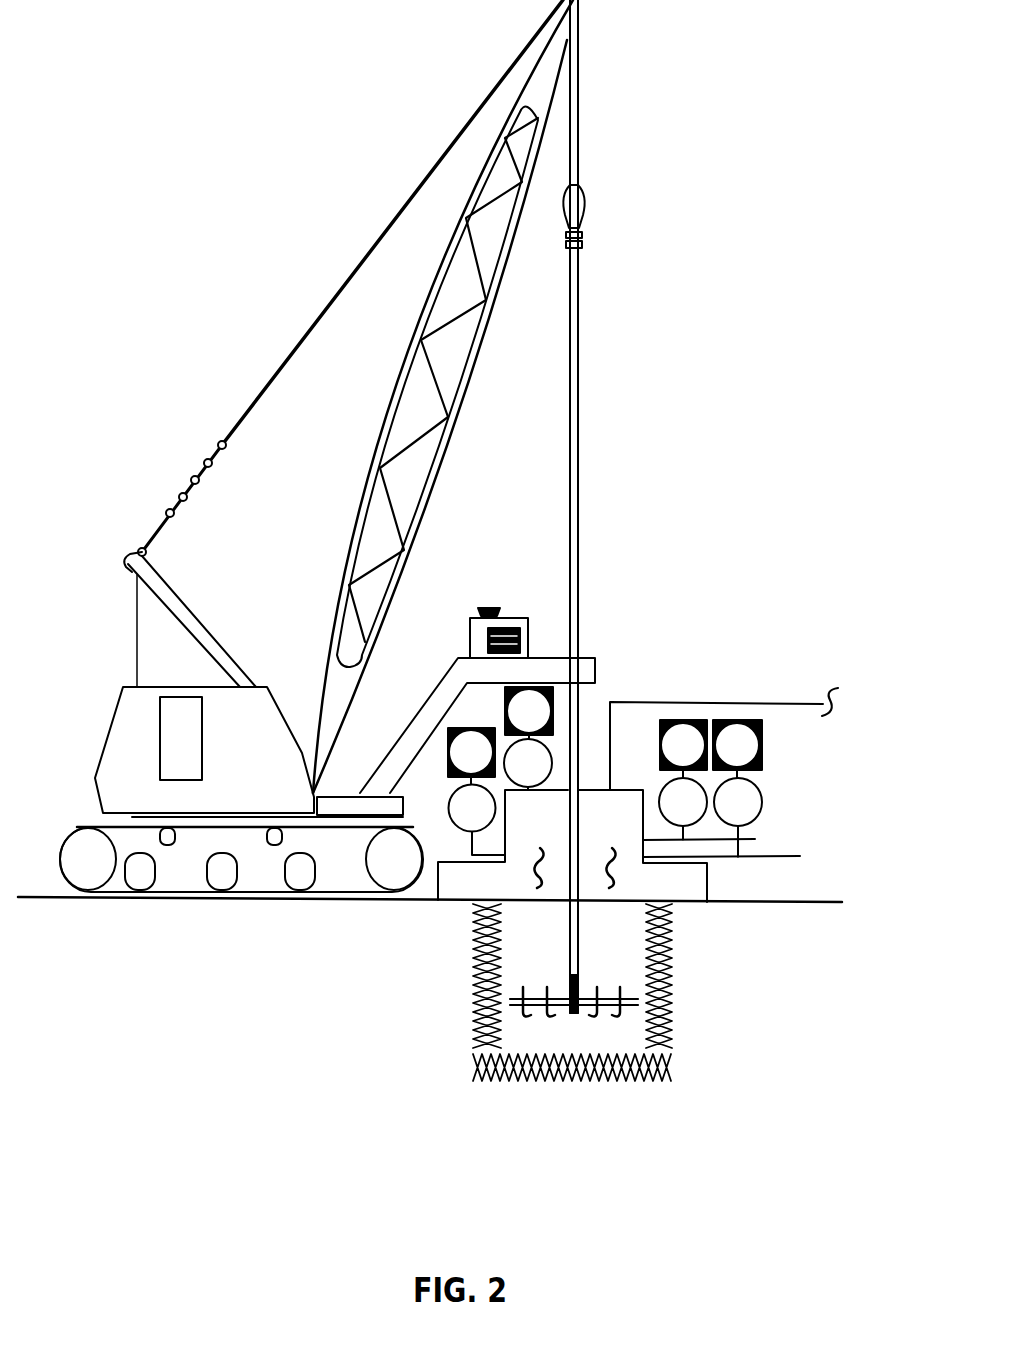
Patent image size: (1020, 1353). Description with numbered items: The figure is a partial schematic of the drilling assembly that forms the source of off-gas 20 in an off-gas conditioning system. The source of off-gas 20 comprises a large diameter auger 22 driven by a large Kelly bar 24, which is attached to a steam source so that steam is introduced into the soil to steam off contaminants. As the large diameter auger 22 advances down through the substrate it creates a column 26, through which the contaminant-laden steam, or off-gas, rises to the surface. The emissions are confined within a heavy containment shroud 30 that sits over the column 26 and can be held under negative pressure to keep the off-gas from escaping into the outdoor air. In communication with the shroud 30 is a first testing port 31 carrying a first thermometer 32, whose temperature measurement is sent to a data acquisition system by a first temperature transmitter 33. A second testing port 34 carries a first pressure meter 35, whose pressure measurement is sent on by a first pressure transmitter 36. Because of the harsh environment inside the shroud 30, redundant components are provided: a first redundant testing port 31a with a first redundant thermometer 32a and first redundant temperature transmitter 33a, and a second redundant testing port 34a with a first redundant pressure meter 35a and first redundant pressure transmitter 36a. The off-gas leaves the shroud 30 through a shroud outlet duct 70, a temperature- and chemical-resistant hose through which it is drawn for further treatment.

The source of off-gas 20 is at (632, 554).
The large diameter auger 22 is at (637, 1003).
The Kelly bar 24 is at (575, 330).
The column 26 is at (625, 960).
The shroud 30 is at (697, 888).
The first testing port 31 is at (432, 849).
The first redundant testing port 31a is at (476, 843).
The first thermometer 32 is at (472, 808).
The first redundant thermometer 32a is at (528, 763).
The first temperature transmitter 33 is at (462, 761).
The first redundant temperature transmitter 33a is at (518, 720).
The second testing port 34 is at (755, 839).
The second redundant testing port 34a is at (800, 856).
The first pressure meter 35 is at (674, 811).
The first redundant pressure meter 35a is at (727, 811).
The first pressure transmitter 36 is at (674, 754).
The first redundant pressure transmitter 36a is at (726, 754).
The shroud outlet duct 70 is at (673, 702).